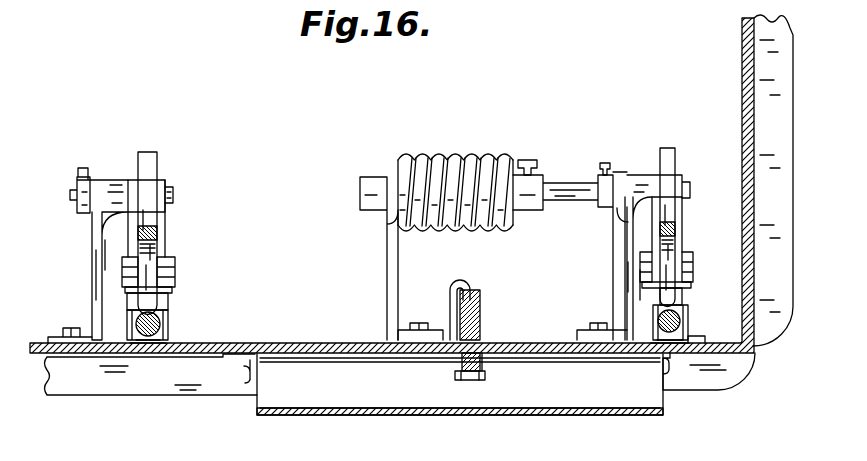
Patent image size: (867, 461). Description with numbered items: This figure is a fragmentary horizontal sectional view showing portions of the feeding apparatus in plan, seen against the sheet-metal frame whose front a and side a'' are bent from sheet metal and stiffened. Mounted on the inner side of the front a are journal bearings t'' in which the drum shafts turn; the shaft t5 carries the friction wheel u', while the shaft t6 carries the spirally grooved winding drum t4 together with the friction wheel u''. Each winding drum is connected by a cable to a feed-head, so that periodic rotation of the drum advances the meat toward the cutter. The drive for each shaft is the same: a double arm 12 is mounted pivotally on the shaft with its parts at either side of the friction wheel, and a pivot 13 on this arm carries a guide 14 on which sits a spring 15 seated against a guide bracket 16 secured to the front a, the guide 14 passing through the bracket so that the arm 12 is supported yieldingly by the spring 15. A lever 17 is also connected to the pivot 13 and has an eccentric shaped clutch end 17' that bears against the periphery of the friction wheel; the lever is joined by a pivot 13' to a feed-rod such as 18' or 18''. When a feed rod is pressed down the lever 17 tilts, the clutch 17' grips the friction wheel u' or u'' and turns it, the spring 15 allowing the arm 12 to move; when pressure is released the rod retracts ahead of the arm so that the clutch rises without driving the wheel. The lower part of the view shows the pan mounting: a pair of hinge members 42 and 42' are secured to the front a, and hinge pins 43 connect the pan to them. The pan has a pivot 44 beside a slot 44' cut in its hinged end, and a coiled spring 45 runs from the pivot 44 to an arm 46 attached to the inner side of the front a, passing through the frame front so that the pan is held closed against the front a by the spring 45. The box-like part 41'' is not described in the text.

The front a is at (392, 185).
The side a'' is at (747, 180).
The friction wheel u' is at (146, 211).
The friction wheel u'' is at (667, 203).
The journal bearings t'' is at (376, 255).
The winding drum t4 is at (445, 152).
The shaft t5 is at (173, 191).
The shaft t6 is at (568, 185).
The double arm 12 is at (158, 246).
The pivot 13 is at (427, 269).
The pivot 13' is at (408, 317).
The guide 14 is at (172, 290).
The spring 15 is at (168, 298).
The guide bracket 16 is at (168, 312).
The lever 17 is at (406, 266).
The clutch end 17' is at (435, 224).
The feed-rod 18' is at (142, 388).
The feed-rod 18'' is at (696, 328).
The box 41'' is at (460, 402).
The hinge member 42 is at (223, 404).
The hinge member 42' is at (709, 402).
The hinge pins 43 is at (246, 371).
The pivot 44 is at (499, 382).
The slot 44' is at (443, 377).
The coiled spring 45 is at (482, 312).
The arm 46 is at (450, 292).